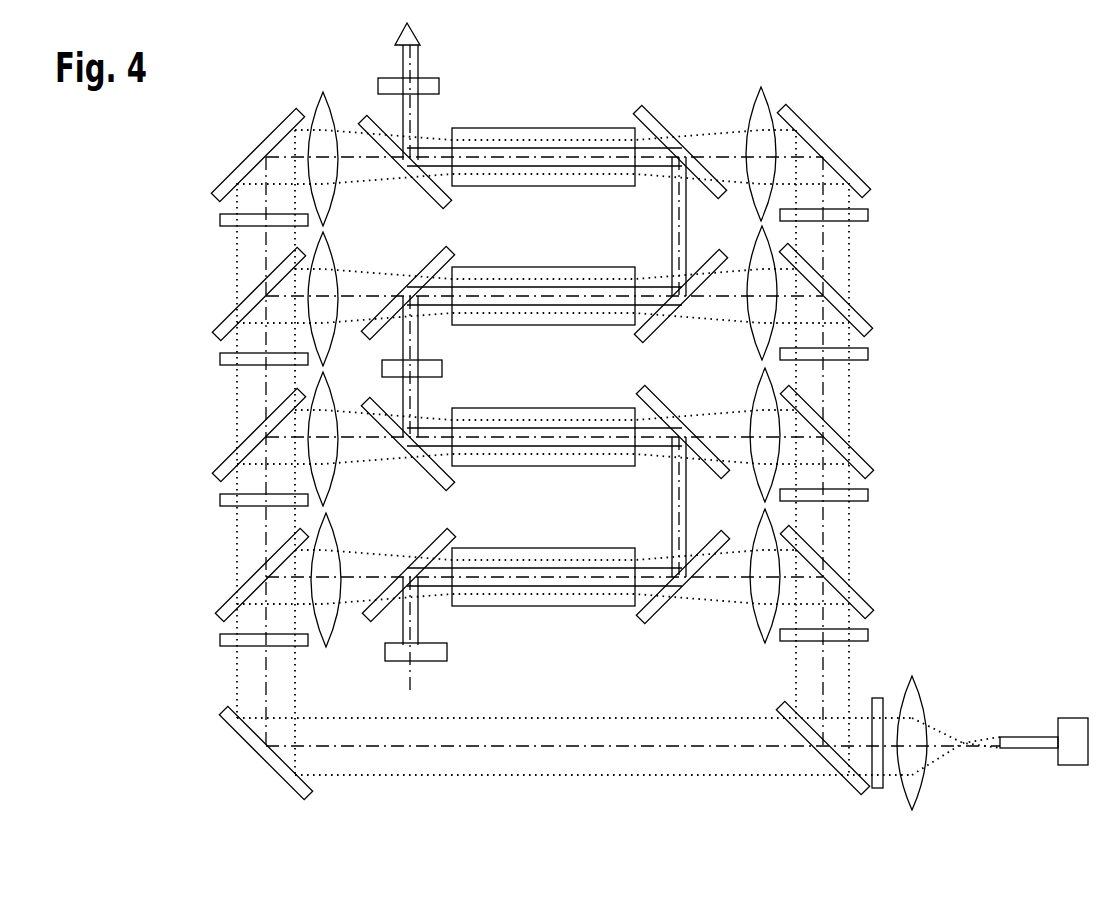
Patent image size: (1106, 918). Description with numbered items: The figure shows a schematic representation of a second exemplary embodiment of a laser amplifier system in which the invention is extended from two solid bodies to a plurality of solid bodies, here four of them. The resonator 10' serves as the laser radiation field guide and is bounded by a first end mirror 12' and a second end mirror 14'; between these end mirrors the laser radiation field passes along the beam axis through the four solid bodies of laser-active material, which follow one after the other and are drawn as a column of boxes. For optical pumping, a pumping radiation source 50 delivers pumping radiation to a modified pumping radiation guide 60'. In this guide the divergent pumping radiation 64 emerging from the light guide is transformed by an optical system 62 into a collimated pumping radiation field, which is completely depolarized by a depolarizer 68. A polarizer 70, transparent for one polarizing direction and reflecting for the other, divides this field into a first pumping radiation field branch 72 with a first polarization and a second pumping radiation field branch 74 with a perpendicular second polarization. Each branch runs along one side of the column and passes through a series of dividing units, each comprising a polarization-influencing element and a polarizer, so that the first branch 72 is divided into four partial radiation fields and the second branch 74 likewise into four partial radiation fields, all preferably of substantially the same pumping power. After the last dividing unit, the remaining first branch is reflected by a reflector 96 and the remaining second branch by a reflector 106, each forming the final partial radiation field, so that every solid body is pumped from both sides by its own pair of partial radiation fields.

The resonator 10' is at (491, 94).
The first end mirror 12' is at (447, 657).
The second end mirror 14' is at (438, 82).
The pumping radiation source 50 is at (1070, 758).
The pumping radiation guide 60' is at (739, 819).
The optical system 62 is at (913, 793).
The divergent pumping radiation 64 is at (965, 735).
The depolarizer 68 is at (877, 790).
The polarizer 70 is at (852, 785).
The first pumping radiation field branch 72 is at (253, 679).
The second pumping radiation field branch 74 is at (845, 668).
The reflector 96 is at (248, 170).
The reflector 106 is at (843, 168).